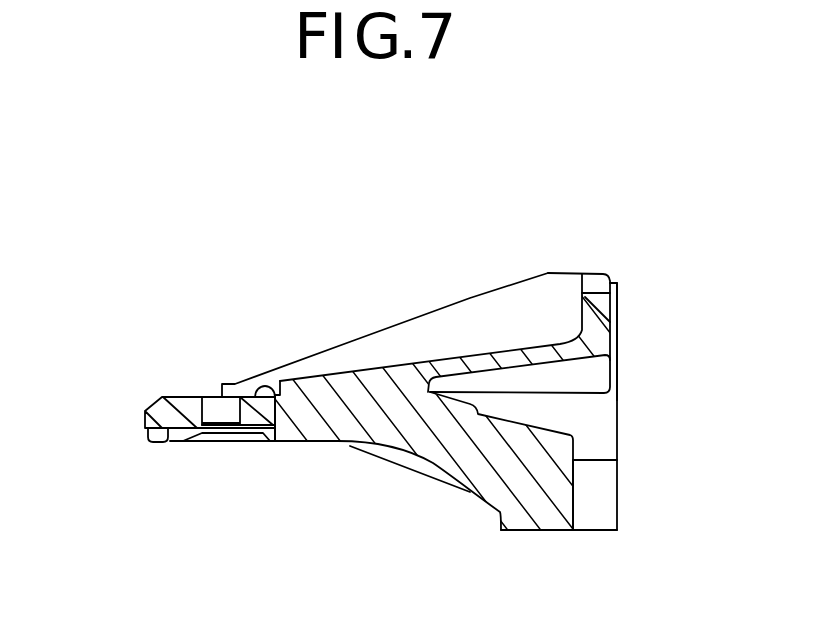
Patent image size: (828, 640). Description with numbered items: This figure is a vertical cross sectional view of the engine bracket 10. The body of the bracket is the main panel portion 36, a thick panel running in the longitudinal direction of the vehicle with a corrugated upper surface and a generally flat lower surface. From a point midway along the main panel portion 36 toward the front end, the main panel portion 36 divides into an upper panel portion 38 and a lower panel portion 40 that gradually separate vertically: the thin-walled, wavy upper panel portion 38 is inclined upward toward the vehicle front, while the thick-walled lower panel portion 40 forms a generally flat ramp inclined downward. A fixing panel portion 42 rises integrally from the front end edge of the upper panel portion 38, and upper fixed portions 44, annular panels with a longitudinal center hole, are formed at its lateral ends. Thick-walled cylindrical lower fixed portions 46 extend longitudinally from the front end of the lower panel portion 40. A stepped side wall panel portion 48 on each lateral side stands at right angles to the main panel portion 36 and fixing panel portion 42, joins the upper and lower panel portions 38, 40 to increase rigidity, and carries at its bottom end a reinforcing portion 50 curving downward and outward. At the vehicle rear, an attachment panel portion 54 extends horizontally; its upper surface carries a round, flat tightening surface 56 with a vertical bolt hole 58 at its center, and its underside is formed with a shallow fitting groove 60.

The engine bracket 10 is at (596, 199).
The main panel portion 36 is at (347, 362).
The upper panel portion 38 is at (510, 353).
The lower panel portion 40 is at (467, 462).
The fixing panel portion 42 is at (601, 323).
The upper fixed portion 44 is at (615, 293).
The lower fixed portion 46 is at (592, 510).
The side wall panel portion 48 is at (433, 323).
The reinforcing portion 50 is at (397, 455).
The attachment panel portion 54 is at (168, 385).
The tightening surface 56 is at (275, 441).
The bolt hole 58 is at (213, 407).
The fitting groove 60 is at (168, 438).